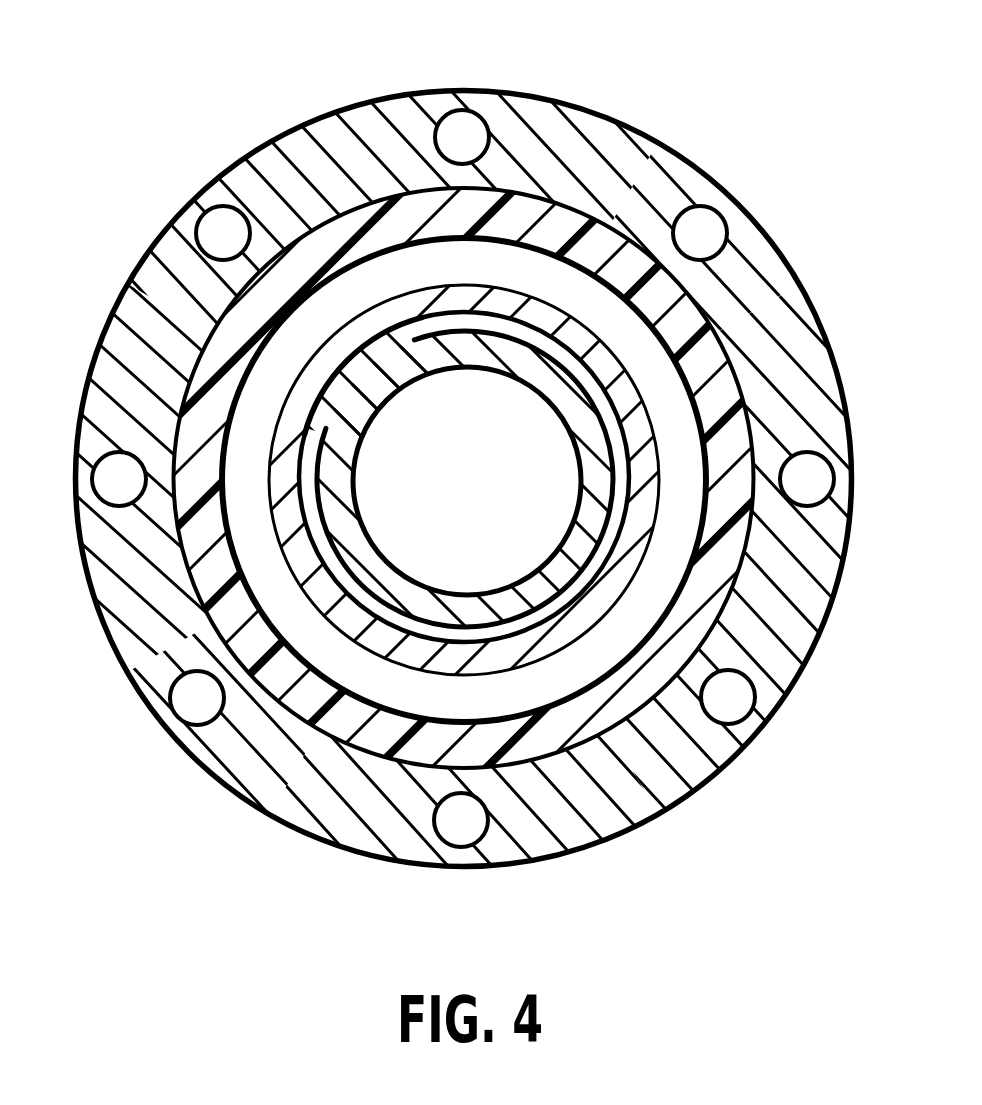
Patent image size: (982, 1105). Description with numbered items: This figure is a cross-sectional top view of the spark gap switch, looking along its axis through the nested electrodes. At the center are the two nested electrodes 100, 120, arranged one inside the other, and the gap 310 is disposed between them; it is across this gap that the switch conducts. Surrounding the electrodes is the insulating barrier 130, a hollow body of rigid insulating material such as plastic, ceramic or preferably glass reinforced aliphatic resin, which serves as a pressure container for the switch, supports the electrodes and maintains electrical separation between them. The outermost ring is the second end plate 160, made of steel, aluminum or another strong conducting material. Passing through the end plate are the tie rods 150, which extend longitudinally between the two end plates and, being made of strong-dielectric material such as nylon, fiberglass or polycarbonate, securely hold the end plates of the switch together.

The electrode 100 is at (587, 538).
The electrode 120 is at (610, 367).
The insulating barrier 130 is at (577, 226).
The tie rods 150 is at (227, 233).
The second end plate 160 is at (286, 161).
The gap 310 is at (527, 335).